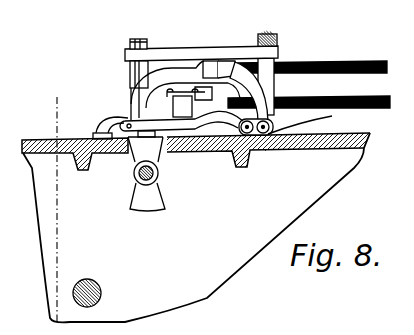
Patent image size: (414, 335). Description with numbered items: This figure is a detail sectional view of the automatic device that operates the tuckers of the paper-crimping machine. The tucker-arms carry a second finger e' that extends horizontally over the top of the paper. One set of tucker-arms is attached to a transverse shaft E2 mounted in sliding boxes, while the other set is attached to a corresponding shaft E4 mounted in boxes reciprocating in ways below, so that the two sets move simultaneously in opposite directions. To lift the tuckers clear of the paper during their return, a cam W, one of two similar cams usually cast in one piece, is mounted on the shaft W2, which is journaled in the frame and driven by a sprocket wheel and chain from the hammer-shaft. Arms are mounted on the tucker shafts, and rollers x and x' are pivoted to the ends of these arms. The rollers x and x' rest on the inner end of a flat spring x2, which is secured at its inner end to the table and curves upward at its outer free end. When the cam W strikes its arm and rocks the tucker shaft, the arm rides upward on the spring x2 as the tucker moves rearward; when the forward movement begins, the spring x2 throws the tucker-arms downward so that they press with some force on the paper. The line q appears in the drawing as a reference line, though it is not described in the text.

The center line q is at (56, 209).
The second finger e' is at (105, 120).
The cam W is at (146, 201).
The shaft W2 is at (157, 174).
The transverse shaft E2 is at (210, 68).
The shaft E4 is at (180, 99).
The roller x is at (190, 124).
The roller x' is at (268, 164).
The flat spring x2 is at (312, 121).